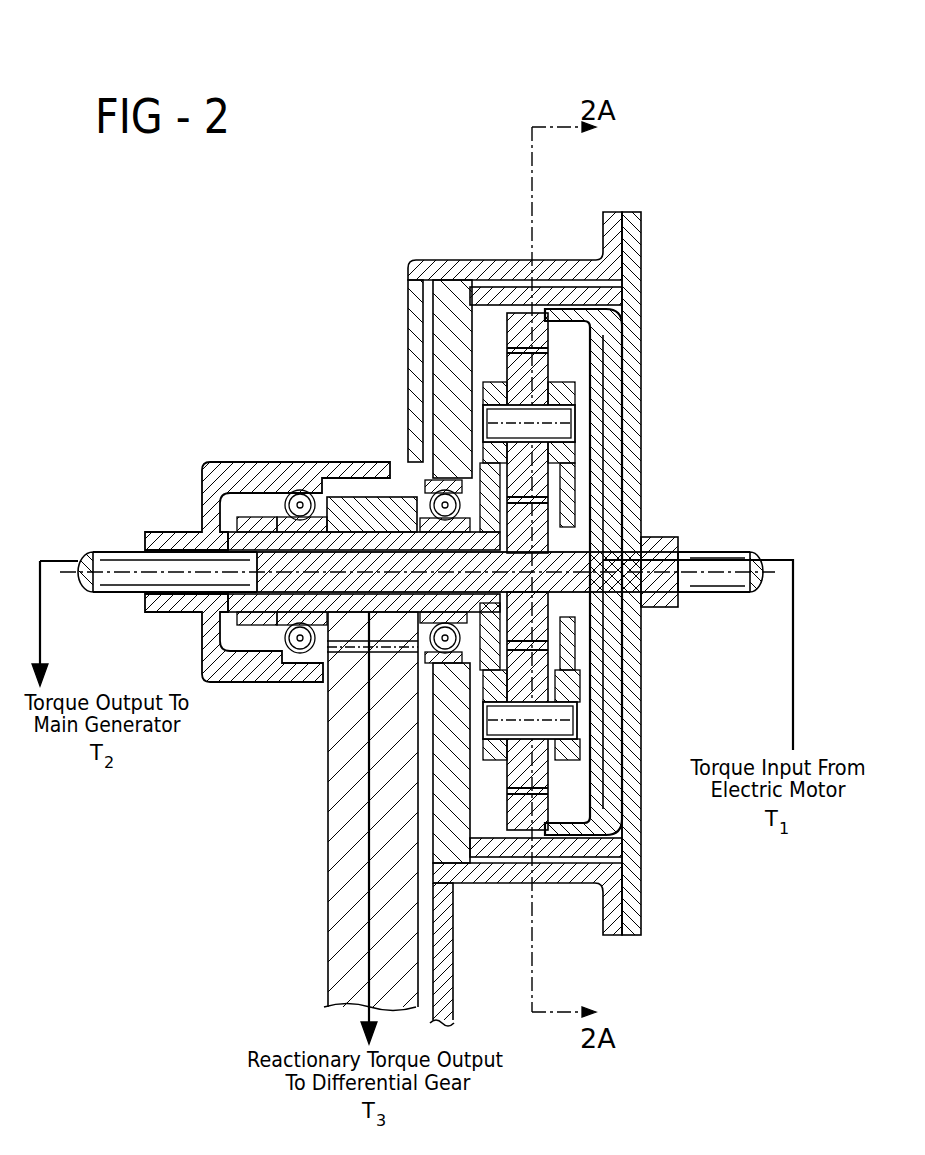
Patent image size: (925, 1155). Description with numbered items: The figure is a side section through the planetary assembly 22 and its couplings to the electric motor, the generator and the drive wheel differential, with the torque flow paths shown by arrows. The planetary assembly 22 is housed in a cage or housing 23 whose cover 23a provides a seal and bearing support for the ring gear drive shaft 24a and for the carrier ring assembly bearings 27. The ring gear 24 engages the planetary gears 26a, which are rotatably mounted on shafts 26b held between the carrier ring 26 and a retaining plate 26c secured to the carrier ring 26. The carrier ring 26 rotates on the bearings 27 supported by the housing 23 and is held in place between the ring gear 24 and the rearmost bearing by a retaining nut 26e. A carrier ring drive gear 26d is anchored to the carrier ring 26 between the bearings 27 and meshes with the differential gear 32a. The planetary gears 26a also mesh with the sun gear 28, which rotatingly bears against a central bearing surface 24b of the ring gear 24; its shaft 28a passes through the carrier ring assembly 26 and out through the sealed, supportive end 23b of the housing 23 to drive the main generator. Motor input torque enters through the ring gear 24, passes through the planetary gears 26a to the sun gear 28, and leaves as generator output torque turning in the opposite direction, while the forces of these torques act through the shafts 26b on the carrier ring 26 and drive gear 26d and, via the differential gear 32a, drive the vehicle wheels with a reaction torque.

The planetary assembly 22 is at (672, 190).
The housing 23 is at (455, 265).
The cover 23a is at (636, 440).
The sealed, supportive end of housing 23b is at (192, 480).
The ring gear 24 is at (615, 386).
The ring gear drive shaft 24a is at (722, 552).
The central bearing surface of ring gear 24b is at (603, 536).
The carrier ring 26 is at (486, 452).
The planetary gears 26a is at (512, 368).
The shafts 26b is at (488, 410).
The retaining plate 26c is at (573, 514).
The carrier ring drive gear 26d is at (368, 497).
The retaining nut 26e is at (262, 627).
The bearings 27 is at (268, 506).
The sun gear 28 is at (565, 600).
The sun gear shaft 28a is at (112, 585).
The differential gear 32a is at (326, 800).